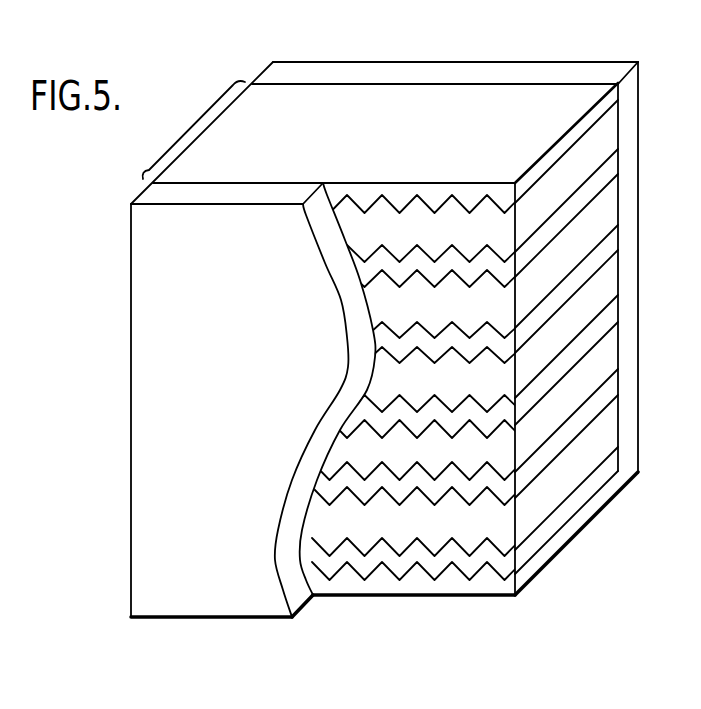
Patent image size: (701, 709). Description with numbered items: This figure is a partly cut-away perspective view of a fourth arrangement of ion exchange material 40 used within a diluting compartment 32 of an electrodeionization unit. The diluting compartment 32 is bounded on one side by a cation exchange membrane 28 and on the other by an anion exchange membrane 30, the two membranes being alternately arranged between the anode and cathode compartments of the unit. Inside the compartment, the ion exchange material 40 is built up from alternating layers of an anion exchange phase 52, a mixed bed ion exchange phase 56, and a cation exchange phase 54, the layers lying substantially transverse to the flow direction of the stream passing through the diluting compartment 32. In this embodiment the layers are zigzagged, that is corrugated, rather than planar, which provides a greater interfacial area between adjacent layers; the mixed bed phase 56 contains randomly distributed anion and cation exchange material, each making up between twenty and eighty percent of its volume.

The cation exchange membrane 28 is at (145, 366).
The anion exchange membrane 30 is at (583, 70).
The diluting compartment 32 is at (186, 131).
The ion exchange material 40 is at (488, 606).
The anion exchange phase 52 is at (470, 196).
The cation exchange phase 54 is at (370, 268).
The mixed bed ion exchange phase 56 is at (449, 243).